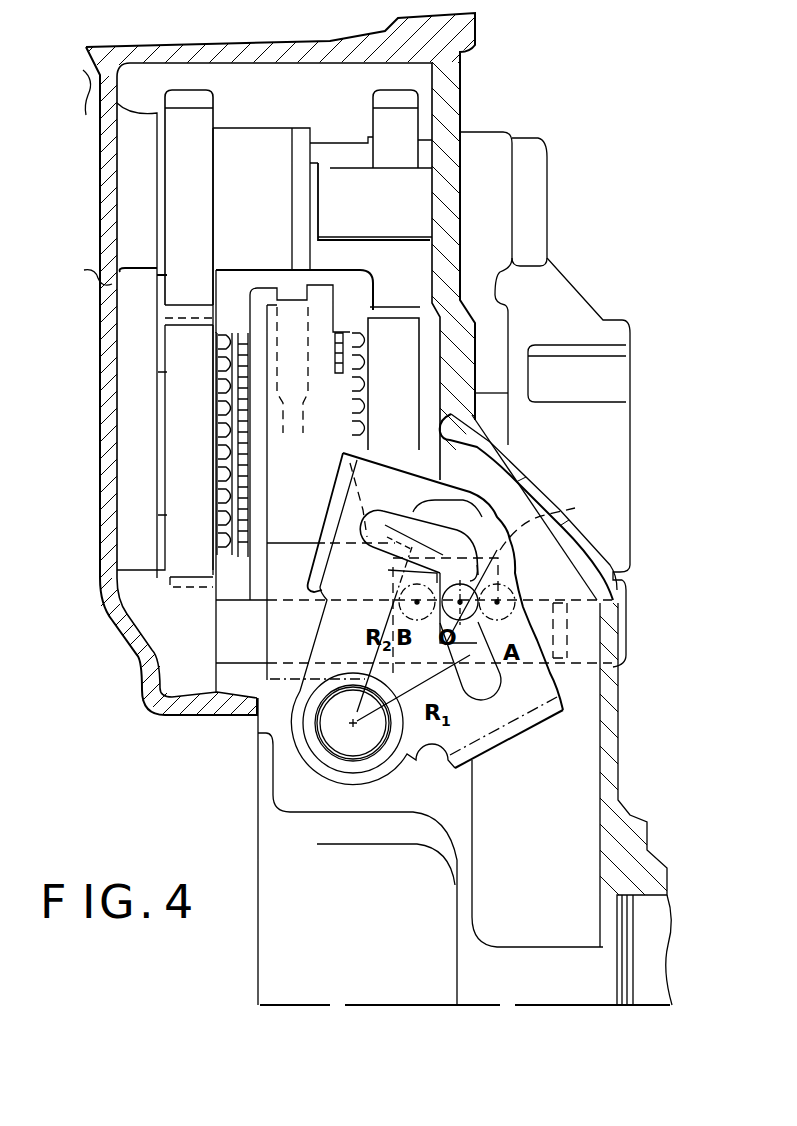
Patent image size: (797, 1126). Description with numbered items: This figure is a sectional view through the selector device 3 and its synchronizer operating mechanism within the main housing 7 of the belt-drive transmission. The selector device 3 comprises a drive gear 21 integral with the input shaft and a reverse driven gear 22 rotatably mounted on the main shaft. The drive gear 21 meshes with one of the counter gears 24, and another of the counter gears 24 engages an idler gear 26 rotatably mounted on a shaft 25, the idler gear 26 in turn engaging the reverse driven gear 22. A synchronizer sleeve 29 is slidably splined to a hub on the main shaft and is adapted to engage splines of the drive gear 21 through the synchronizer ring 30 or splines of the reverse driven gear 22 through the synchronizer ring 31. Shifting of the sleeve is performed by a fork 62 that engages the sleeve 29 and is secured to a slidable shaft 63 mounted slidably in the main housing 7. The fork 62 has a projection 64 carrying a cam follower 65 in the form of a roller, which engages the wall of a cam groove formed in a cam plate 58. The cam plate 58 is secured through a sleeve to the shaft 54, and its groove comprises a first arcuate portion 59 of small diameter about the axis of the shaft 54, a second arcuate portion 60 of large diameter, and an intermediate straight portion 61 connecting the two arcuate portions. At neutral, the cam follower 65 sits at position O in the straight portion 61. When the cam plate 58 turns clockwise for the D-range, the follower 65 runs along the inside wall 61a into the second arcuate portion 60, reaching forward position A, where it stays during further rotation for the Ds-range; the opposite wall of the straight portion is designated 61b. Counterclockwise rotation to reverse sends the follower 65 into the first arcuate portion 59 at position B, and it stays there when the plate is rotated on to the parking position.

The selector device 3 is at (364, 90).
The main housing 7 is at (154, 703).
The drive gear 21 is at (407, 373).
The reverse driven gear 22 is at (204, 450).
The counter gears 24 is at (408, 153).
The shaft 25 is at (416, 221).
The idler gear 26 is at (200, 233).
The synchronizer sleeve 29 is at (277, 297).
The synchronizer ring 30 is at (363, 343).
The synchronizer ring 31 is at (233, 333).
The shaft 54 is at (398, 755).
The cam plate 58 is at (507, 743).
The first arcuate portion 59 is at (557, 688).
The second arcuate portion 60 is at (432, 485).
The intermediate straight portion 61 is at (452, 557).
The inside wall 61a is at (420, 672).
The slot end 61b is at (476, 578).
The fork 62 is at (278, 510).
The slidable shaft 63 is at (243, 660).
The projection 64 is at (570, 508).
The cam follower 65 is at (406, 572).